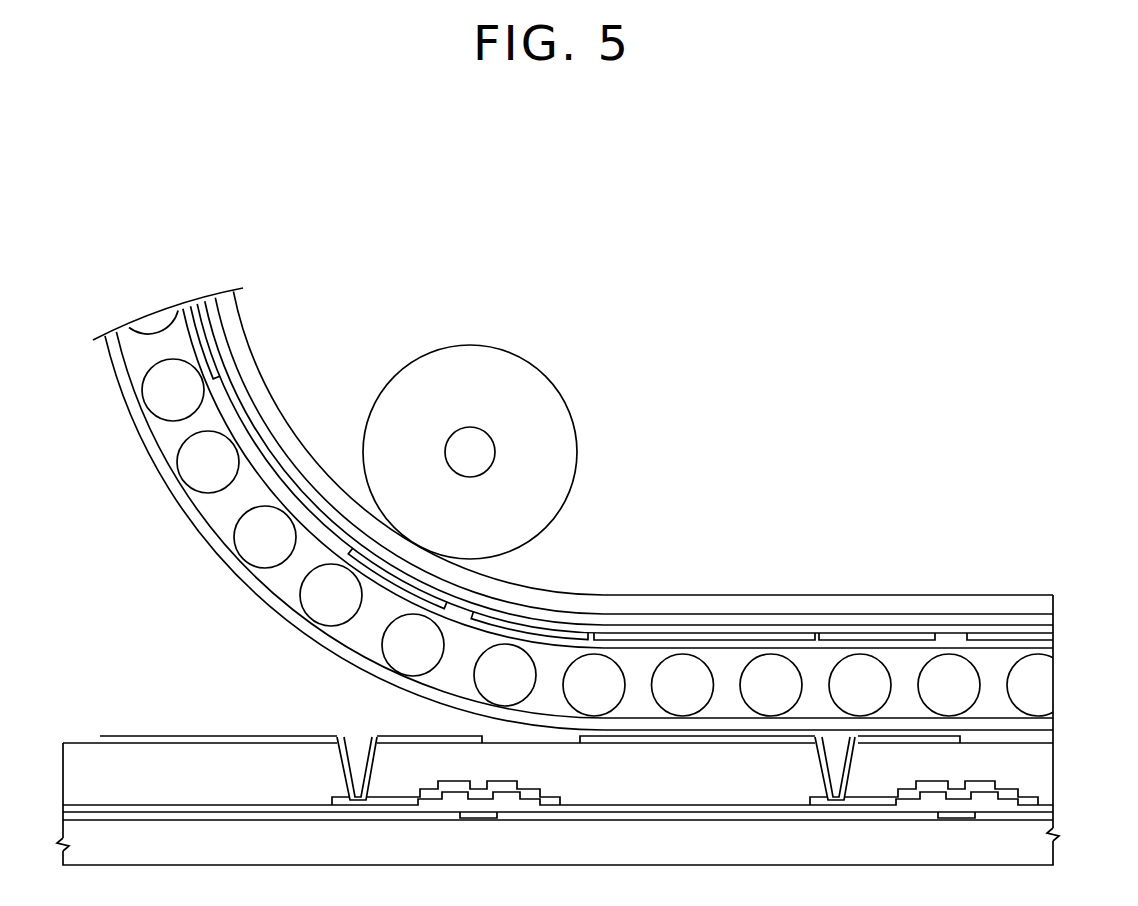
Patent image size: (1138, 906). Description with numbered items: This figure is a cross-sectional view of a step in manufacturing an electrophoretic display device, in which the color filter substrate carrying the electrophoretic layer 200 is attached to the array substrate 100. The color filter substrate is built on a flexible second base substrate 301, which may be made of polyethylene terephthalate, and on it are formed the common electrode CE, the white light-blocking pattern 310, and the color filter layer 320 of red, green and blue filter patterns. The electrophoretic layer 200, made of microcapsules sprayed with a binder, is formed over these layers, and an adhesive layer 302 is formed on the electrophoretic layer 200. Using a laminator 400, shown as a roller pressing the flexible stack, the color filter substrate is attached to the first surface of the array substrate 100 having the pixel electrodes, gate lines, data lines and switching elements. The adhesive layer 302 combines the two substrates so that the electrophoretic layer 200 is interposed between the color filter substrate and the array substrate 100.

The array substrate 100 is at (1060, 728).
The electrophoretic layer 200 is at (1060, 650).
The second base substrate 301 is at (1052, 603).
The adhesive layer 302 is at (234, 570).
The white light-blocking pattern 310 is at (1052, 628).
The color filter layer 320 is at (843, 640).
The laminator 400 is at (547, 350).
The common electrode CE is at (1052, 620).